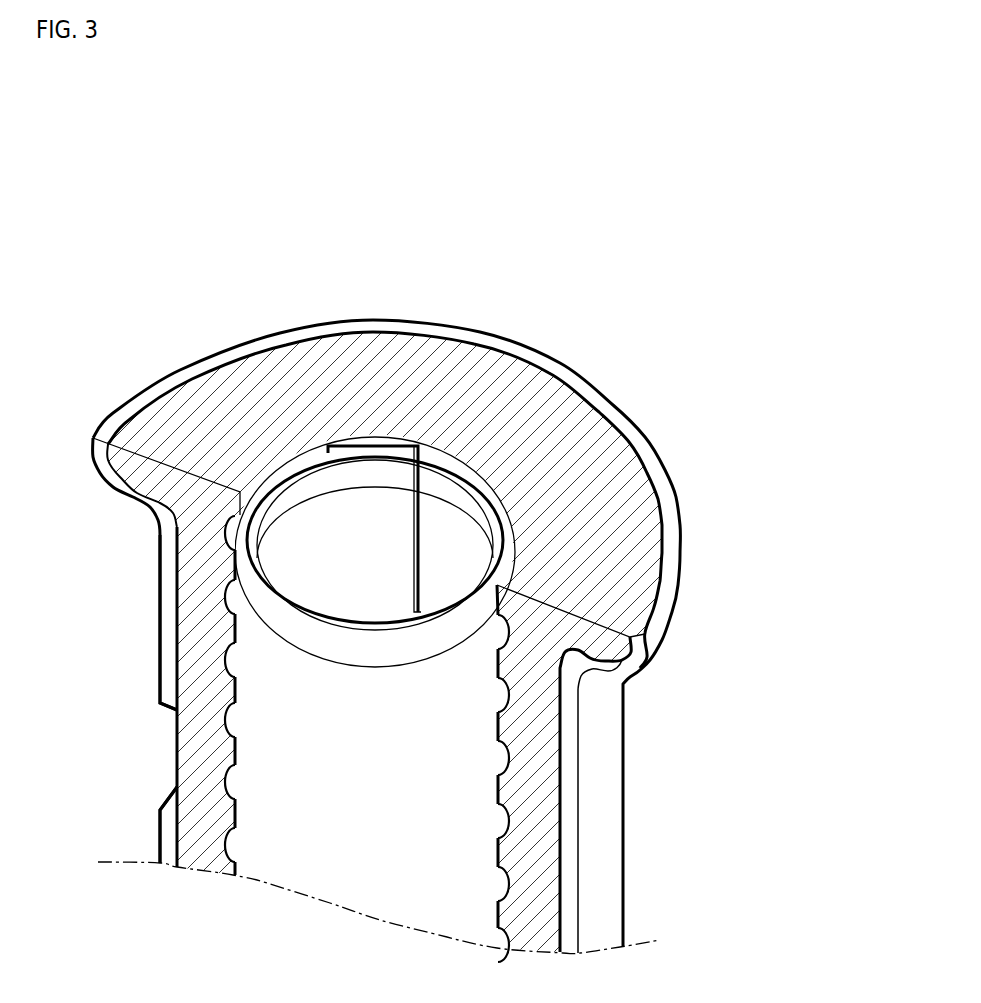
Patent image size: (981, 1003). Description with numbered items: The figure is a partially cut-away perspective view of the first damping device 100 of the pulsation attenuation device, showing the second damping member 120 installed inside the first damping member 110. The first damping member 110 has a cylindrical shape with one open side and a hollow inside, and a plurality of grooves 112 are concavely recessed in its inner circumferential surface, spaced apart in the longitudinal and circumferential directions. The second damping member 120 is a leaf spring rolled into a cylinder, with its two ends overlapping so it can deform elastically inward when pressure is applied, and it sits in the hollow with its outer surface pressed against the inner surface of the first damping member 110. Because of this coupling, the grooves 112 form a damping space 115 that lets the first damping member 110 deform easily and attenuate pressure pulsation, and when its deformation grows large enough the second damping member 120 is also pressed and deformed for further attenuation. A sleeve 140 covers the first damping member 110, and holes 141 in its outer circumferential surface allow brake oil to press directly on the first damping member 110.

The first damping device 100 is at (613, 284).
The first damping member 110 is at (577, 430).
The grooves 112 is at (507, 825).
The damping space 115 is at (503, 880).
The second damping member 120 is at (281, 870).
The sleeve 140 is at (568, 745).
The holes 141 is at (170, 753).